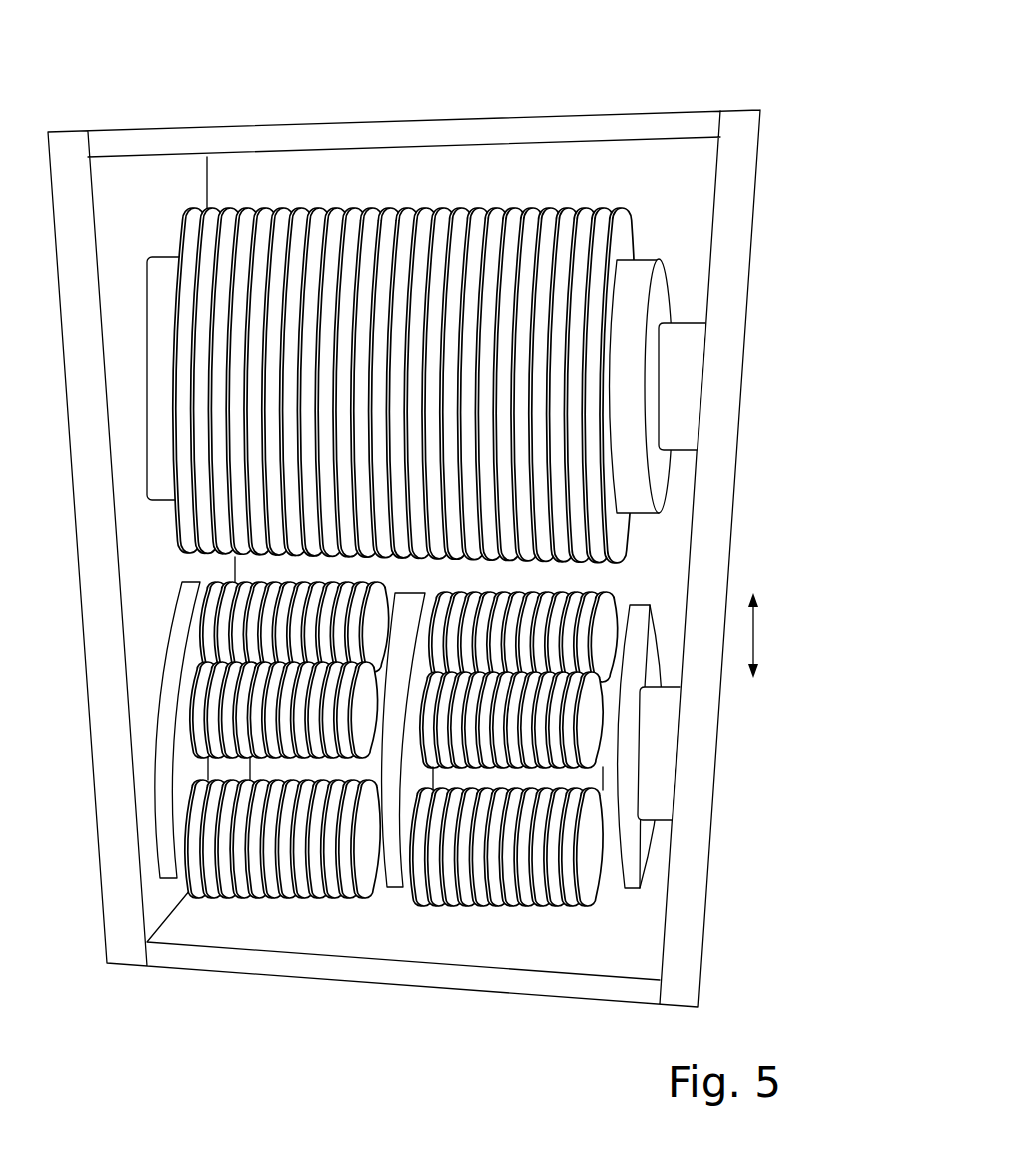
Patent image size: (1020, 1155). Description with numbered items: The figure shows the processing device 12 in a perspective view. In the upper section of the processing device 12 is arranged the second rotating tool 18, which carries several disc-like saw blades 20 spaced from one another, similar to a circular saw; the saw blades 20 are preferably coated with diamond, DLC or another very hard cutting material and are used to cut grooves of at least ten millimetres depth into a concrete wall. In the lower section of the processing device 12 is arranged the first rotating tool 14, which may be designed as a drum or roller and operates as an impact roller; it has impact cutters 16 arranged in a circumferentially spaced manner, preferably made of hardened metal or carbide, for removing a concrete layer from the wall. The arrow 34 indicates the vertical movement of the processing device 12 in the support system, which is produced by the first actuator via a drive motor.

The processing device 12 is at (473, 98).
The first rotating tool 14 is at (417, 822).
The impact cutters 16 is at (398, 893).
The second rotating tool 18 is at (427, 323).
The saw blades 20 is at (228, 210).
The arrow 34 is at (753, 638).